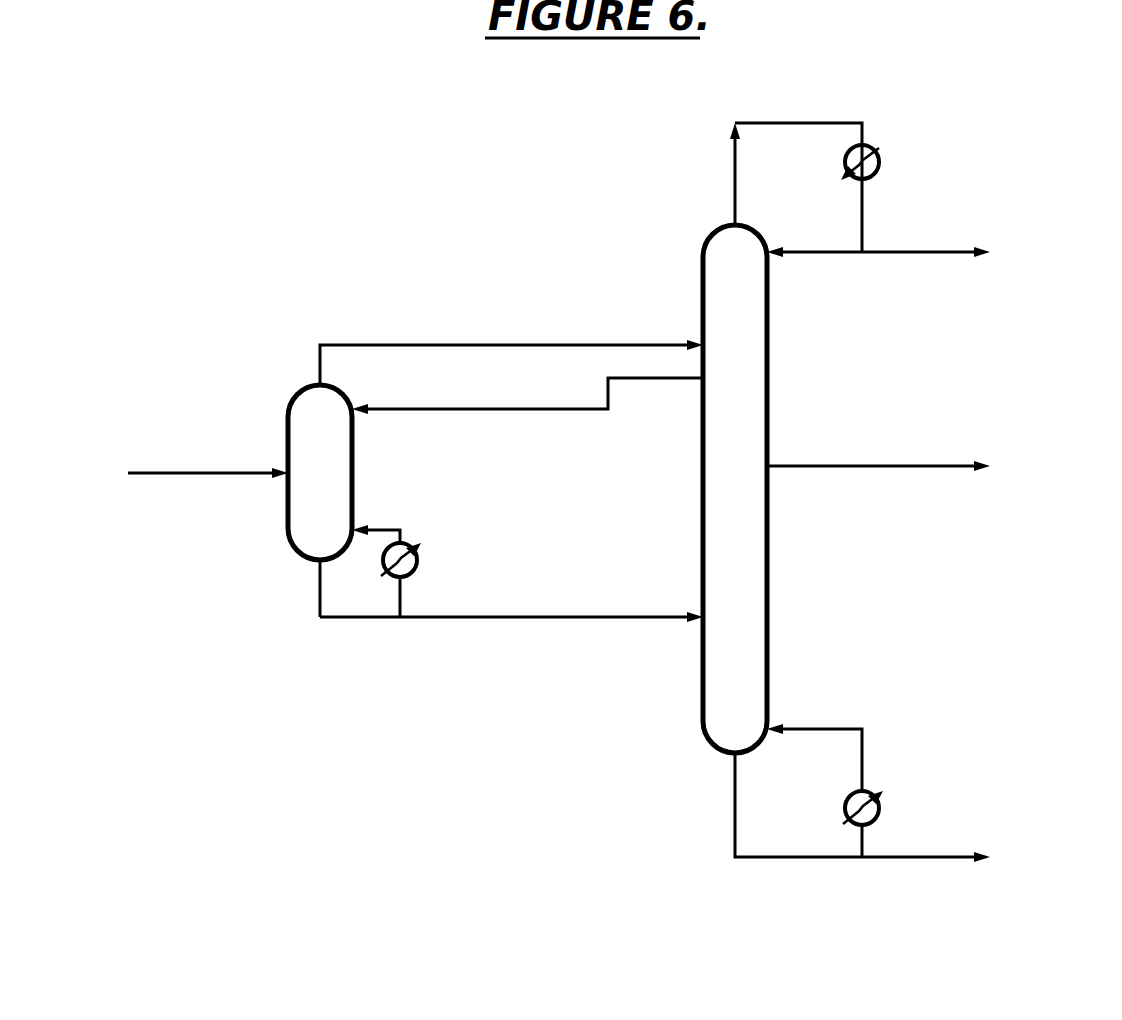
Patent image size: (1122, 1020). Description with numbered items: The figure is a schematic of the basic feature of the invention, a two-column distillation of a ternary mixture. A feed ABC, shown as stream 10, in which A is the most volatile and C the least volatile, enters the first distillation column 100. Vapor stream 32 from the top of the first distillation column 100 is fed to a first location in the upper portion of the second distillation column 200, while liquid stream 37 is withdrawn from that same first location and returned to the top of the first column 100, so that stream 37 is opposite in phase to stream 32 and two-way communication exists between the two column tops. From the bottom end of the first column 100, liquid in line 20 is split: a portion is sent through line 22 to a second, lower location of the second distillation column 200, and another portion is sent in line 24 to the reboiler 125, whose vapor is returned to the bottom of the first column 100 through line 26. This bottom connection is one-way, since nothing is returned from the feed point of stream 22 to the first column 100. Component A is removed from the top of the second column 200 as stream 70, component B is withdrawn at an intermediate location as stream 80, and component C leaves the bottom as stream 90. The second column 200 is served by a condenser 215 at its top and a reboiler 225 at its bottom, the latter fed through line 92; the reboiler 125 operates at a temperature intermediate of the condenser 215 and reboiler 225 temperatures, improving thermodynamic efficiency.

The feed stream ABC 10 is at (187, 477).
The liquid stream line 20 is at (318, 608).
The liquid line to second column 22 is at (552, 618).
The liquid line to reboiler 24 is at (402, 598).
The vapor return line 26 is at (372, 530).
The vapor stream 32 is at (546, 345).
The liquid stream 37 is at (550, 410).
The overhead product stream A 70 is at (920, 251).
The side draw product stream B 80 is at (868, 465).
The bottoms product stream C 90 is at (918, 858).
The reboiler return stream 92 is at (824, 729).
The first distillation column 100 is at (352, 472).
The reboiler 125 is at (418, 560).
The second distillation column 200 is at (767, 576).
The condenser 215 is at (881, 154).
The reboiler 225 is at (882, 808).